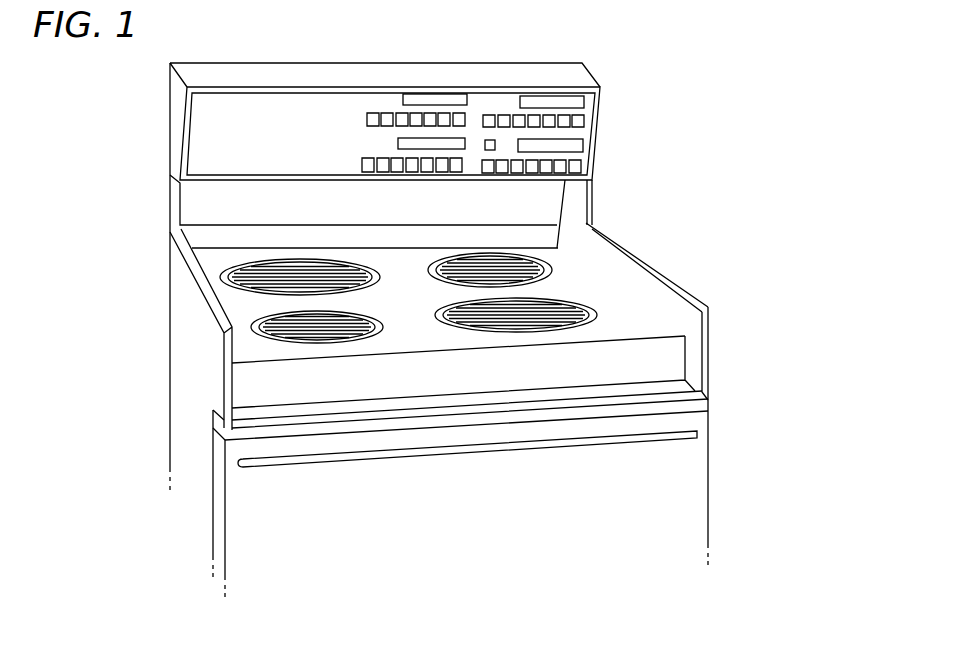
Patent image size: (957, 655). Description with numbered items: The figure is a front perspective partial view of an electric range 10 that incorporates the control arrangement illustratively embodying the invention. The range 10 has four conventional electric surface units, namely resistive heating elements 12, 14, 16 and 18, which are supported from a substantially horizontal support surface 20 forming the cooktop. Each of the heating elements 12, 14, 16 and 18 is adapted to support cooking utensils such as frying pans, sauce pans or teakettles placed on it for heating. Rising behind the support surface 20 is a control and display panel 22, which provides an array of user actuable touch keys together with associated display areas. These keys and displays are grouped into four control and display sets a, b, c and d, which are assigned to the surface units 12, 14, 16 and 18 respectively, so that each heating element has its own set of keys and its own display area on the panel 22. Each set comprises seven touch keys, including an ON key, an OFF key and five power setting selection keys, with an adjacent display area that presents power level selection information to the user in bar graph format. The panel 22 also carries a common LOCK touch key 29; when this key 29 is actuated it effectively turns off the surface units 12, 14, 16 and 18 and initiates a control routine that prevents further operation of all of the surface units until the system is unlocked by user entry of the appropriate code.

The electric range 10 is at (467, 309).
The resistive heating element 12 is at (357, 317).
The resistive heating element 14 is at (363, 272).
The resistive heating element 16 is at (548, 272).
The resistive heating element 18 is at (594, 318).
The horizontal support surface 20 is at (439, 326).
The control and display panel 22 is at (427, 134).
The LOCK touch key 29 is at (487, 150).
The control and display set a is at (356, 151).
The control and display set b is at (382, 99).
The control and display set c is at (593, 108).
The control and display set d is at (591, 147).